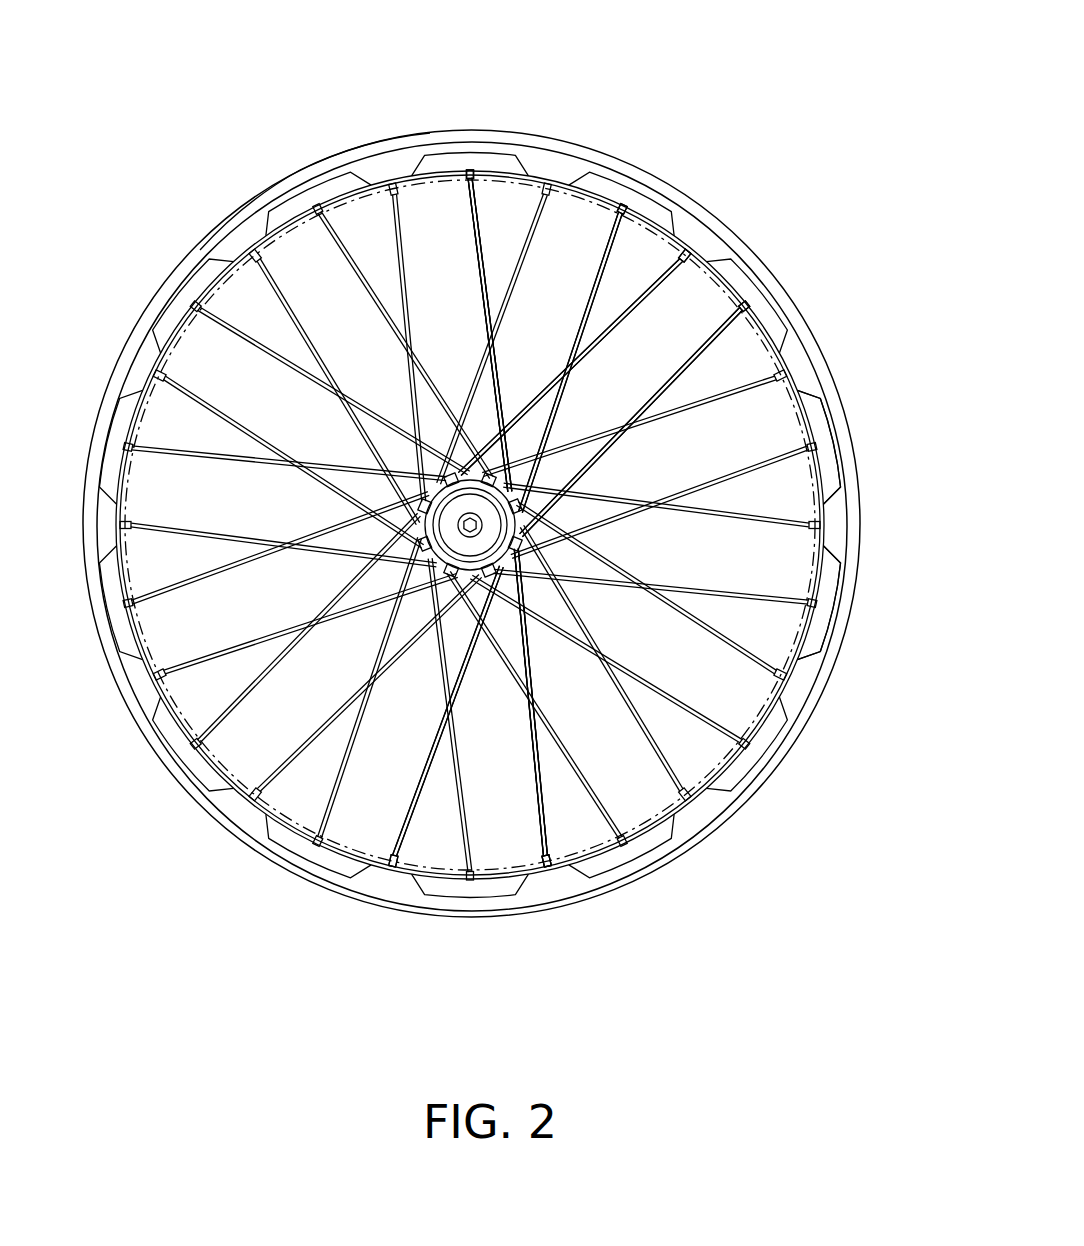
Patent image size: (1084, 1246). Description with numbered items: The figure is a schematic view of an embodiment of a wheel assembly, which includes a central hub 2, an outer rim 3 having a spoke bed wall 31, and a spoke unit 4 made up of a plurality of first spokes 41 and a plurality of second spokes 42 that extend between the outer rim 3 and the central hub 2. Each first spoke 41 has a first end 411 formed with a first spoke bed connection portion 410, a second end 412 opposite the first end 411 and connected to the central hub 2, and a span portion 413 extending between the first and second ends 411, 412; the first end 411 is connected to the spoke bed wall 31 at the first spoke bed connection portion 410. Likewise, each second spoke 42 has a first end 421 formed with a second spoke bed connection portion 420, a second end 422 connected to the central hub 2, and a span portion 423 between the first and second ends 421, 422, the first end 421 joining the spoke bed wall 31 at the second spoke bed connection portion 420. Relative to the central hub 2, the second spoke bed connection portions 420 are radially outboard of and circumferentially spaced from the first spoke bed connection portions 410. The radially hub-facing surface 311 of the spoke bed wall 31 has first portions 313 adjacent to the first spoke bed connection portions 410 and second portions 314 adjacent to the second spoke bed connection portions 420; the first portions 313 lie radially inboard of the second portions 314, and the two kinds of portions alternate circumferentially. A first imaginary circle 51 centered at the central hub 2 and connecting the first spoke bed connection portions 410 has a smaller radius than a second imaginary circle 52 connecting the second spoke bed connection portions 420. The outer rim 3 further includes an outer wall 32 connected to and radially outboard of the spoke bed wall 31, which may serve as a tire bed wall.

The central hub 2 is at (441, 492).
The outer rim 3 is at (857, 505).
The spoke bed wall 31 is at (845, 384).
The radially hub-facing surface 311 is at (633, 200).
The first portions 313 is at (847, 537).
The second portions 314 is at (745, 305).
The outer wall 32 is at (760, 783).
The spoke unit 4 is at (492, 532).
The first spokes 41 is at (687, 198).
The first spoke bed connection portion 410 is at (690, 245).
The first end 411 is at (505, 800).
The second end 412 is at (475, 780).
The span portion 413 is at (537, 770).
The second spokes 42 is at (510, 72).
The second spoke bed connection portion 420 is at (772, 336).
The first end 421 is at (488, 245).
The second end 422 is at (540, 378).
The span portion 423 is at (520, 290).
The first imaginary circle 51 is at (343, 183).
The second imaginary circle 52 is at (243, 252).